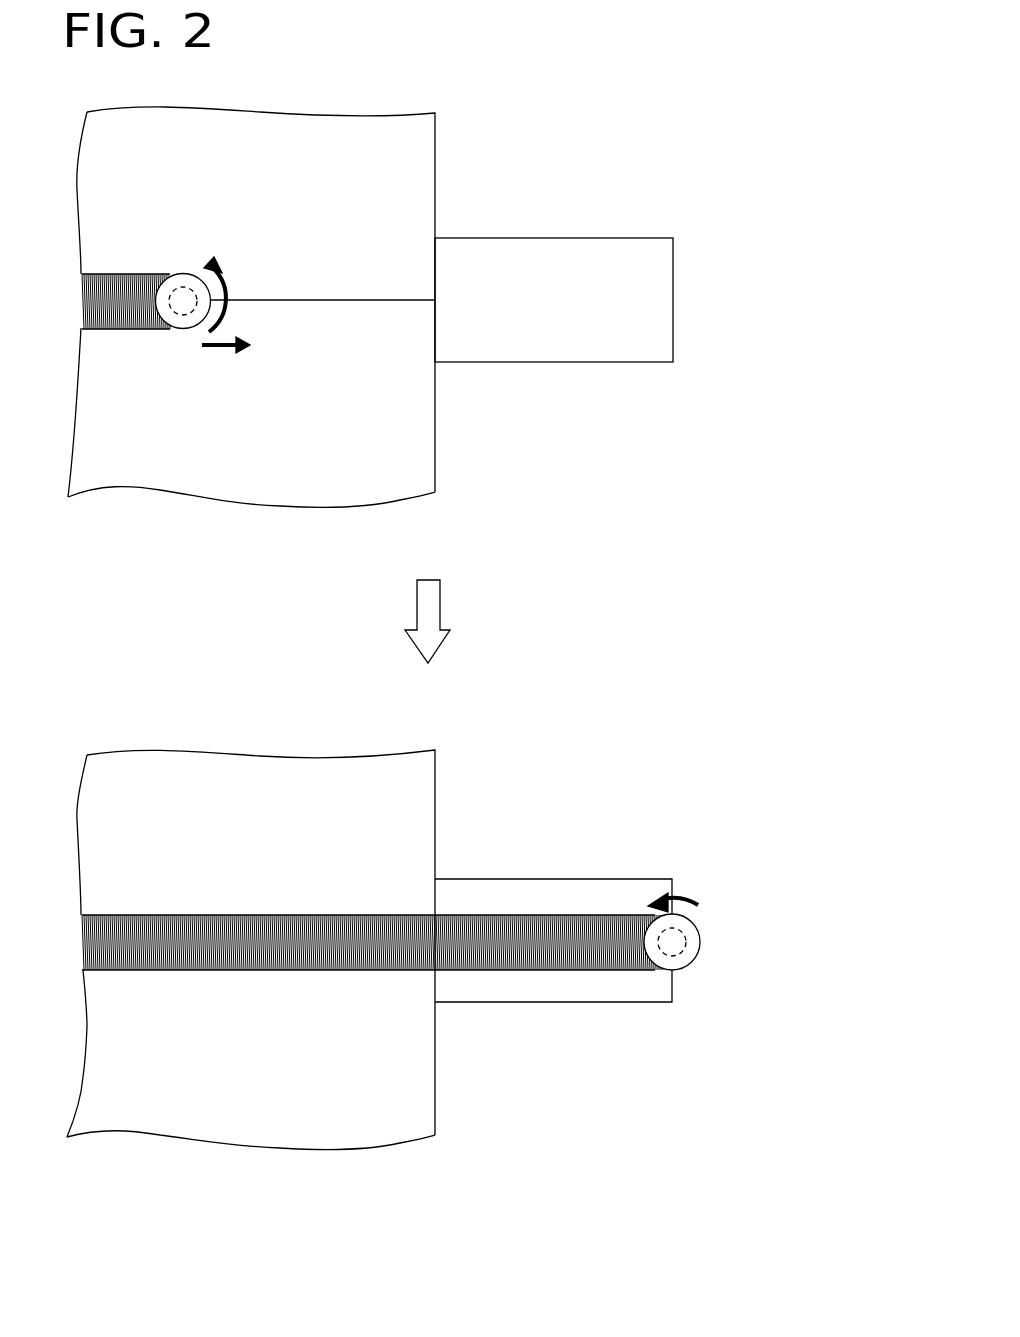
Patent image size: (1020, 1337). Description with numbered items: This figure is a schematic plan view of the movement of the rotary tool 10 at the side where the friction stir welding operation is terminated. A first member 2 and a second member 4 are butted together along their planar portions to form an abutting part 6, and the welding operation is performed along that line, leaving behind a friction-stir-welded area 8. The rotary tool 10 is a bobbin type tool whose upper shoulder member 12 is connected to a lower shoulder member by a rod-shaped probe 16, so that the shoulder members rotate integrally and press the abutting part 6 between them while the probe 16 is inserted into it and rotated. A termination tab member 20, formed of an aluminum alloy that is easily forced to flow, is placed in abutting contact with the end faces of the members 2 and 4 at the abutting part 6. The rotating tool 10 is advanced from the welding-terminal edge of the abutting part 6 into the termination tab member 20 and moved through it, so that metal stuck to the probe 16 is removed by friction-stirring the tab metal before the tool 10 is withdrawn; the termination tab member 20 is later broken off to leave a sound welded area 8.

The first member 2 is at (286, 148).
The second member 4 is at (275, 482).
The abutting part 6 is at (341, 308).
The friction-stir-welded area 8 is at (105, 287).
The rotary tool 10 is at (188, 266).
The upper shoulder member 12 is at (193, 327).
The probe 16 is at (184, 310).
The termination tab member 20 is at (655, 270).